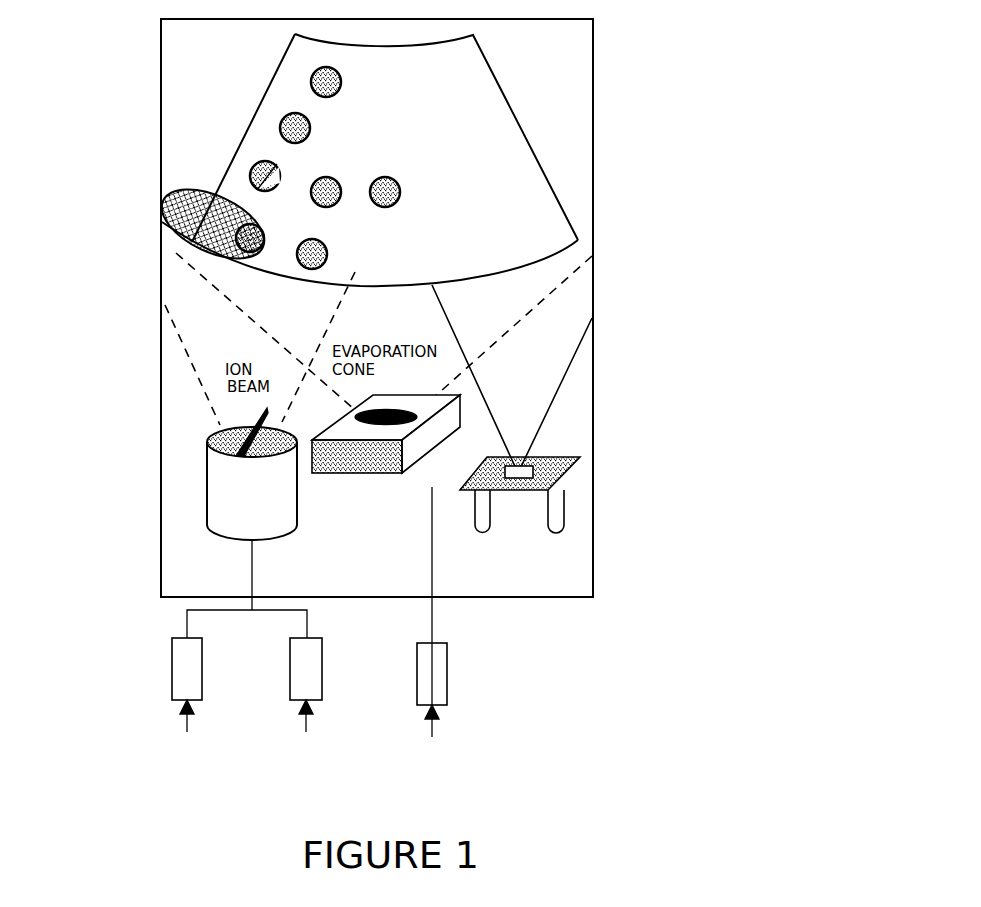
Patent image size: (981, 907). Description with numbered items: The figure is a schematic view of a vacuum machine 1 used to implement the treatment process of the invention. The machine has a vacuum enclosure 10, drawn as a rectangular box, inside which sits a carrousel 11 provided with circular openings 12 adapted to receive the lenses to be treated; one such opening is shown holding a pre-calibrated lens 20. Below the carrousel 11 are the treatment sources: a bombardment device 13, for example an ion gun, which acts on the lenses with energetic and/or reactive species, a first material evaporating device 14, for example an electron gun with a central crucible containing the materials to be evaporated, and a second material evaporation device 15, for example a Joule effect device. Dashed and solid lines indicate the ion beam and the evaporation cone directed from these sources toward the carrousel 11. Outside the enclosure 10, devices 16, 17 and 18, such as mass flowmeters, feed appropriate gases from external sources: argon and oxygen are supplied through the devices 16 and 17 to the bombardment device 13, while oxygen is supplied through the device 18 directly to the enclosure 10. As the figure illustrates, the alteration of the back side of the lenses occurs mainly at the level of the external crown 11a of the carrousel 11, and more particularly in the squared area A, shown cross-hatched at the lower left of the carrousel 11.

The vacuum machine 1 is at (628, 196).
The vacuum enclosure 10 is at (160, 397).
The carrousel 11 is at (492, 105).
The external crown 11a is at (306, 267).
The circular openings 12 is at (313, 72).
The pre-calibrated lens 20 is at (257, 164).
The squared area A is at (165, 220).
The bombardment device 13 is at (232, 508).
The first material evaporating device 14 is at (460, 410).
The second material evaporation device 15 is at (567, 470).
The gas feeding device 16 is at (177, 672).
The gas feeding device 17 is at (307, 655).
The gas feeding device 18 is at (440, 673).